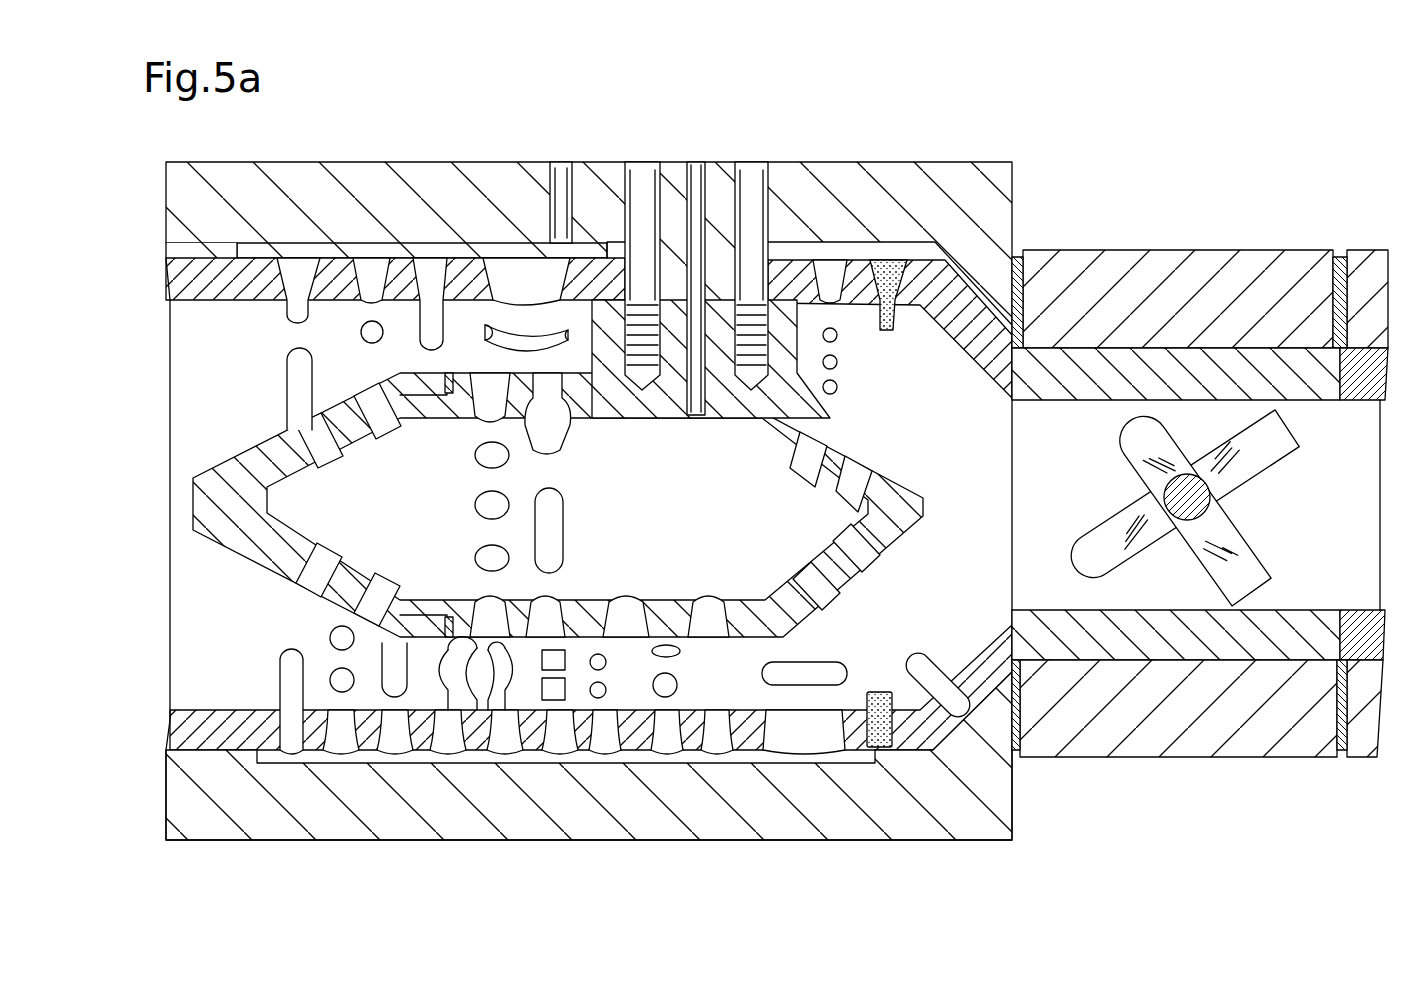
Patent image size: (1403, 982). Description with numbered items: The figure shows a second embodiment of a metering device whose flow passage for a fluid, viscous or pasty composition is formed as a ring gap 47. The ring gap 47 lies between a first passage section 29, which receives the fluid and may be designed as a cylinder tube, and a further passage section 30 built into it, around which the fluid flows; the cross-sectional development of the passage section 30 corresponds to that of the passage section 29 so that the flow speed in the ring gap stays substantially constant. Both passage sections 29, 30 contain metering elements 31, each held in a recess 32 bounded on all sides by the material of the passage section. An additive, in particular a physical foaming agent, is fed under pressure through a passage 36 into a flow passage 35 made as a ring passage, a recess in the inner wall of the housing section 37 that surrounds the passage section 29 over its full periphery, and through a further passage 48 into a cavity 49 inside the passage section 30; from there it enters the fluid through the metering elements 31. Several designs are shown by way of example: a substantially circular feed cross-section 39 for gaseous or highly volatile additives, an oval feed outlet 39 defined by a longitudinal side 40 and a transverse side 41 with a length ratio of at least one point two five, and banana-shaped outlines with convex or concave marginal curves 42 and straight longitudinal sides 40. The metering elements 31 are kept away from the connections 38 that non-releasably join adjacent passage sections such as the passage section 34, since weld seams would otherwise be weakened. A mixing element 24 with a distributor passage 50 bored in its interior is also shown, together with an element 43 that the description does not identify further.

The mixing element 24 is at (1147, 420).
The fluid receiving passage section 29 is at (790, 267).
The passage section around which fluid flows 30 is at (377, 392).
The metering element 31 is at (300, 277).
The recess 32 is at (268, 277).
The passage section 34 is at (1100, 363).
The flow passage 35 is at (423, 243).
The passage for the additive supply 36 is at (558, 177).
The housing section 37 is at (1282, 273).
The connections 38 is at (1013, 380).
The feed cross-section 39 is at (361, 332).
The longitudinal side 40 is at (813, 687).
The transverse side 41 is at (858, 680).
The marginal curves 42 is at (465, 697).
The channel opening 43 is at (290, 693).
The ring gap 47 is at (580, 315).
The further passage 48 is at (697, 178).
The cavity 49 is at (677, 643).
The distributor passage 50 is at (863, 547).